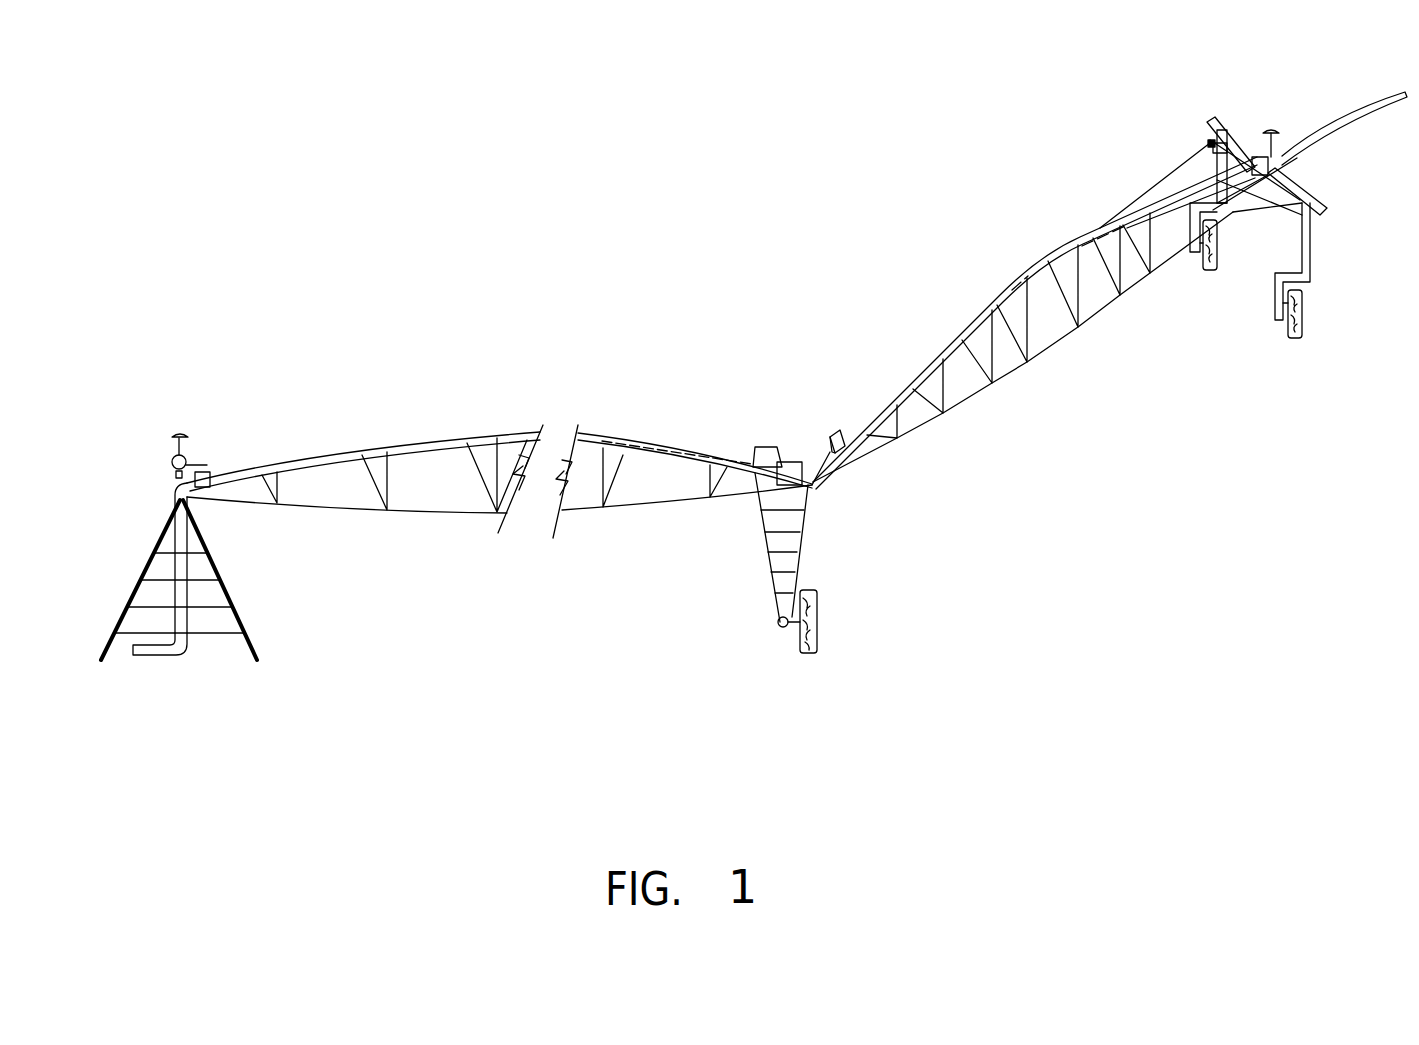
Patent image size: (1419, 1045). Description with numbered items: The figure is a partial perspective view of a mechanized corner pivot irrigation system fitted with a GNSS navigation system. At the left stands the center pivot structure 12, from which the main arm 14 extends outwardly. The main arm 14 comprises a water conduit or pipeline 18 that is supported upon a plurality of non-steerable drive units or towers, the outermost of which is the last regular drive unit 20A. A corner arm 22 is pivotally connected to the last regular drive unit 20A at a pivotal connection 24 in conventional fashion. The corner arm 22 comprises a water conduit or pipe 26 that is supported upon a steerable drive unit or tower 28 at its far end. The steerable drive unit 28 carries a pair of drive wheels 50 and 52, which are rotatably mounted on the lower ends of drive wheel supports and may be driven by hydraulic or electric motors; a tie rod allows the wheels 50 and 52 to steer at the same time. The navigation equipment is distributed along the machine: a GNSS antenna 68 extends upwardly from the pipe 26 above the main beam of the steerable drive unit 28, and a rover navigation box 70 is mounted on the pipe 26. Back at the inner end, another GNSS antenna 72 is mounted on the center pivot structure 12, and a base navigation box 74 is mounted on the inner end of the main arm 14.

The center pivot structure 12 is at (225, 593).
The main arm 14 is at (483, 433).
The water conduit or pipeline 18 is at (652, 447).
The last regular drive unit (LRDU) 20A is at (765, 582).
The corner arm 22 is at (1020, 252).
The pivotal connection 24 is at (812, 485).
The water conduit or pipe 26 is at (1002, 292).
The steerable drive unit (SDU) or tower 28 is at (1318, 240).
The drive wheel 50 is at (1205, 263).
The drive wheel 52 is at (1292, 335).
The GNSS antenna 68 is at (1257, 140).
The rover navigation box 70 is at (1252, 168).
The GNSS antenna 72 is at (183, 430).
The base navigation box 74 is at (210, 473).